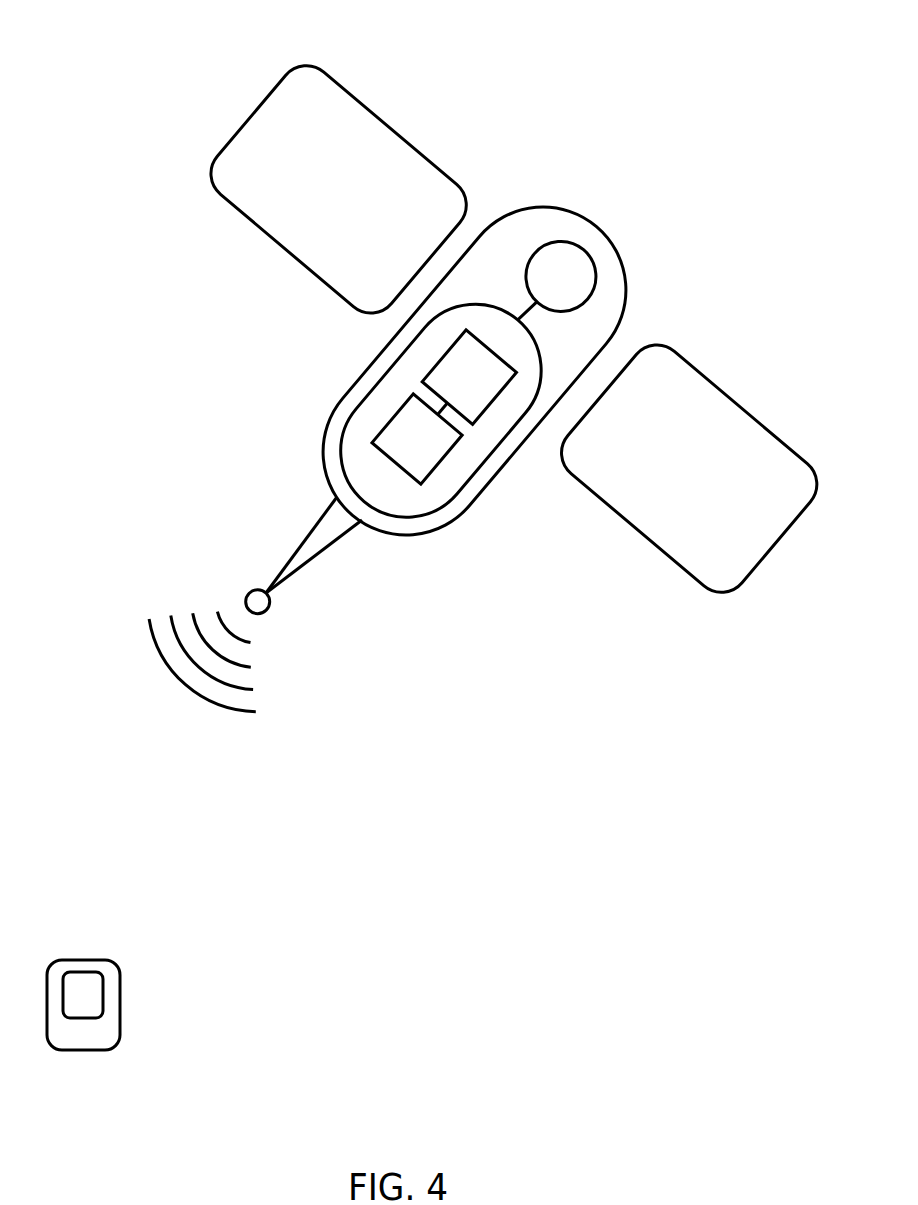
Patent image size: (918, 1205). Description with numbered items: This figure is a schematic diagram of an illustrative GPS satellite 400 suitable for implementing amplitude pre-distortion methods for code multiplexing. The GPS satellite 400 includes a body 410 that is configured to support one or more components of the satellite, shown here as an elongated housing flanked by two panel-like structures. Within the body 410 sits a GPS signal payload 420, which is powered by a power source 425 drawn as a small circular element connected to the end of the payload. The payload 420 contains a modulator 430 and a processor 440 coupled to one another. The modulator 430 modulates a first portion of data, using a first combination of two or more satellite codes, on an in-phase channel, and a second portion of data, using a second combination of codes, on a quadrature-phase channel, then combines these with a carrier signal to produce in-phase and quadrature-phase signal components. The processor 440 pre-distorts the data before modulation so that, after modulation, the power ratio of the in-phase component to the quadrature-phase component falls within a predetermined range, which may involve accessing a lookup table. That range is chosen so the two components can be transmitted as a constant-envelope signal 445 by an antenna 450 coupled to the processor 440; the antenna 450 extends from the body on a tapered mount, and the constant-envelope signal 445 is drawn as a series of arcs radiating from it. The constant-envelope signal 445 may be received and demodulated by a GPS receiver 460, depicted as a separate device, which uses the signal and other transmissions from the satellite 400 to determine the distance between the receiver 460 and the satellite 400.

The GPS satellite 400 is at (195, 50).
The body 410 is at (517, 232).
The GPS signal payload 420 is at (377, 410).
The power source 425 is at (565, 273).
The modulator 430 is at (475, 382).
The processor 440 is at (407, 453).
The constant-envelope signal 445 is at (185, 617).
The antenna 450 is at (325, 537).
The GPS receiver 460 is at (90, 1031).